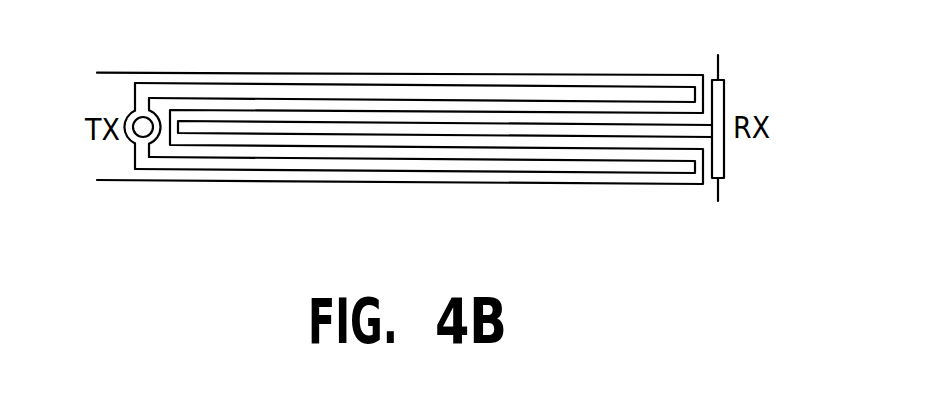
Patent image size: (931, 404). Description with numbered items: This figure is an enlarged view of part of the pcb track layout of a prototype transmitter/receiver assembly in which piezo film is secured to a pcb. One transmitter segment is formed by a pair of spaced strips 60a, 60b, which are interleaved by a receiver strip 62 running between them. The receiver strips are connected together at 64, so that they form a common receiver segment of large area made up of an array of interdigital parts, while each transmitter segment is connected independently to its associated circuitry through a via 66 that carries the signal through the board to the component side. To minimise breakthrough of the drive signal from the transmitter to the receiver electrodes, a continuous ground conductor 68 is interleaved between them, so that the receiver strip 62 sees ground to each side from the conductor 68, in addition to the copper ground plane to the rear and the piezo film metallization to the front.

The spaced strip 60a is at (439, 88).
The spaced strip 60b is at (525, 167).
The receiver strip 62 is at (418, 128).
The receiver connection 64 is at (720, 150).
The via 66 is at (142, 128).
The continuous ground conductor 68 is at (284, 181).